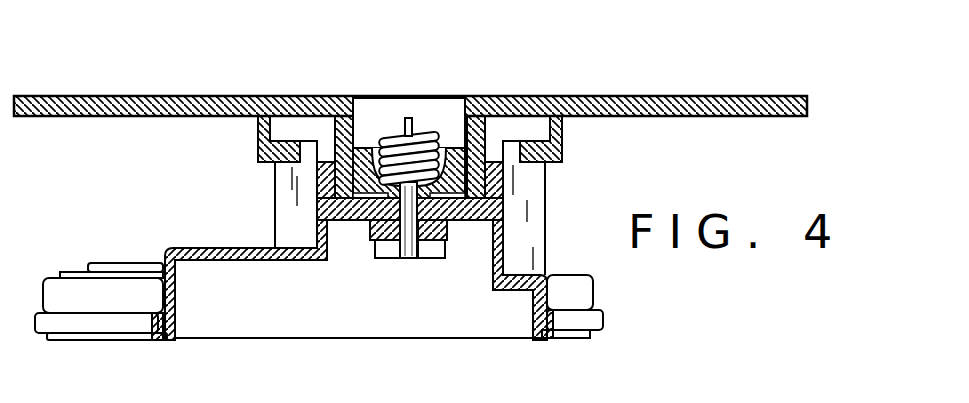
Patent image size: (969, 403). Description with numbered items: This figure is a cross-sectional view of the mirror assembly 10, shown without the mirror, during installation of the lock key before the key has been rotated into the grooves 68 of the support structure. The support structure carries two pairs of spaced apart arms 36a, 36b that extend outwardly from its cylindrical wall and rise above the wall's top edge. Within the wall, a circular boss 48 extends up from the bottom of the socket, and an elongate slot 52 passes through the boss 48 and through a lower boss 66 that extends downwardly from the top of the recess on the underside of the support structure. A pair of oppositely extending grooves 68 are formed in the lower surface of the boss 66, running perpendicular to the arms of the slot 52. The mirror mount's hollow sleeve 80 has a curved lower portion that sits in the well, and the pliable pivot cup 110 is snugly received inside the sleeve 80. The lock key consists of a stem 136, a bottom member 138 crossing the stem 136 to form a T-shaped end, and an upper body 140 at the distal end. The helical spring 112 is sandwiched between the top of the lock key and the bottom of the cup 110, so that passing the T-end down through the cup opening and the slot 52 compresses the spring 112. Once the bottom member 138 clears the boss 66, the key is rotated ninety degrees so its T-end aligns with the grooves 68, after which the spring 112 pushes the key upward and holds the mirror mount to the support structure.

The mirror assembly 10 is at (700, 63).
The arm 36a is at (523, 180).
The arm 36b is at (293, 182).
The circular boss 48 is at (317, 208).
The elongate slot 52 is at (420, 242).
The boss 66 is at (370, 220).
The grooves 68 is at (378, 240).
The hollow sleeve 80 is at (485, 133).
The pivot cup 110 is at (473, 215).
The helical spring 112 is at (430, 135).
The stem 136 is at (390, 236).
The bottom member 138 is at (406, 258).
The upper body 140 is at (412, 118).